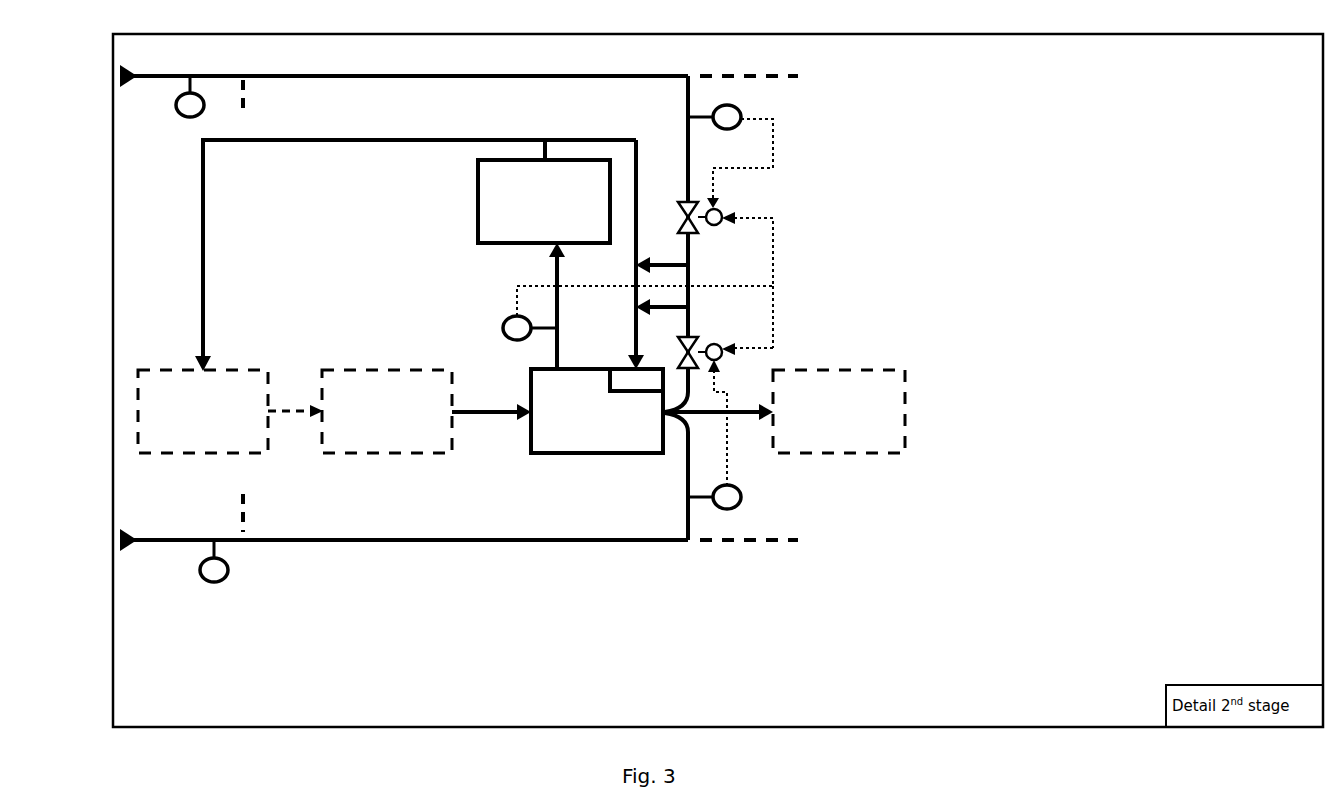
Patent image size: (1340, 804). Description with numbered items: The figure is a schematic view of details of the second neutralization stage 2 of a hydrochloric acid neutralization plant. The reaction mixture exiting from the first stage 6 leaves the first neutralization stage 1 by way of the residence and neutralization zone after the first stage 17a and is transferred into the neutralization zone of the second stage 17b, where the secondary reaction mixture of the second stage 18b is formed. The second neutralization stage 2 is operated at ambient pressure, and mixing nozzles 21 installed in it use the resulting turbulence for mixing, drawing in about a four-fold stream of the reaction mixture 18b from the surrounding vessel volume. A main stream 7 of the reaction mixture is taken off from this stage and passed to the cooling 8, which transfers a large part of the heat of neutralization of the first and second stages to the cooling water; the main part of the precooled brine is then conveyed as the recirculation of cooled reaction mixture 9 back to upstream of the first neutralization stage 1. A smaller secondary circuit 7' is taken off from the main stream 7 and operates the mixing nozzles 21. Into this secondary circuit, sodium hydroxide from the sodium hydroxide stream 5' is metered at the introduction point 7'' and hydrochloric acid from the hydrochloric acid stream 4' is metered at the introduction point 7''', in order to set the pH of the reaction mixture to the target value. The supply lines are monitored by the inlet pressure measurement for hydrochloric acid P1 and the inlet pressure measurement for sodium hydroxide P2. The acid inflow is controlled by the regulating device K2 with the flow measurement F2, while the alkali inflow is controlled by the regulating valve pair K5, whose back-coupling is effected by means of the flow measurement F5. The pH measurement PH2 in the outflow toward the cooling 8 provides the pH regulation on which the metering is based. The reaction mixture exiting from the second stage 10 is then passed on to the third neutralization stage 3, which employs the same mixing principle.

The first neutralization stage 1 is at (203, 411).
The second neutralization stage 2 is at (597, 421).
The third neutralization stage 3 is at (839, 411).
The hydrochloric acid stream 4' is at (459, 89).
The sodium hydroxide stream 5' is at (459, 526).
The reaction mixture exiting from the first stage 6 is at (491, 418).
The main stream from the second neutralization stage 7 is at (555, 306).
The smaller secondary circuit 7' is at (629, 254).
The metered addition of sodium hydroxide 7'' is at (673, 311).
The metered addition of hydrochloric acid 7''' is at (675, 261).
The cooling 8 is at (544, 191).
The recirculation of cooled reaction mixture 9 is at (415, 255).
The reaction mixture exiting from the second stage 10 is at (718, 418).
The residence and neutralization zone after the first stage 17a is at (360, 411).
The neutralization zone of the second stage 17b is at (531, 447).
The secondary reaction mixture of the second stage 18b is at (646, 441).
The mixing nozzles of the second stage 21 is at (636, 380).
The inlet pressure measurement for hydrochloric acid P1 is at (186, 105).
The inlet pressure measurement for sodium hydroxide P2 is at (211, 570).
The flow measurement for hydrochloric acid inflow F2 is at (719, 308).
The flow measurement for sodium hydroxide inflow F5 is at (727, 500).
The regulating device for hydrochloric acid inflow K2 is at (725, 222).
The regulating valve pair for sodium hydroxide inflow K5 is at (725, 385).
The pH measurement after second neutralization stage PH2 is at (621, 279).